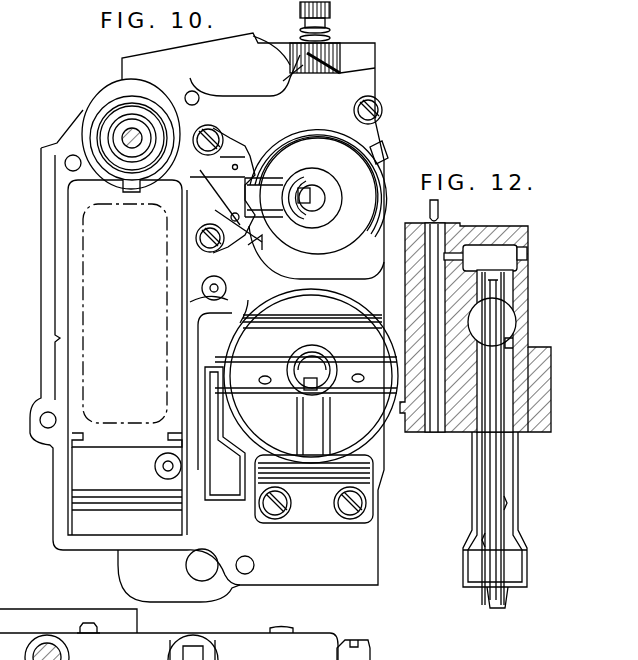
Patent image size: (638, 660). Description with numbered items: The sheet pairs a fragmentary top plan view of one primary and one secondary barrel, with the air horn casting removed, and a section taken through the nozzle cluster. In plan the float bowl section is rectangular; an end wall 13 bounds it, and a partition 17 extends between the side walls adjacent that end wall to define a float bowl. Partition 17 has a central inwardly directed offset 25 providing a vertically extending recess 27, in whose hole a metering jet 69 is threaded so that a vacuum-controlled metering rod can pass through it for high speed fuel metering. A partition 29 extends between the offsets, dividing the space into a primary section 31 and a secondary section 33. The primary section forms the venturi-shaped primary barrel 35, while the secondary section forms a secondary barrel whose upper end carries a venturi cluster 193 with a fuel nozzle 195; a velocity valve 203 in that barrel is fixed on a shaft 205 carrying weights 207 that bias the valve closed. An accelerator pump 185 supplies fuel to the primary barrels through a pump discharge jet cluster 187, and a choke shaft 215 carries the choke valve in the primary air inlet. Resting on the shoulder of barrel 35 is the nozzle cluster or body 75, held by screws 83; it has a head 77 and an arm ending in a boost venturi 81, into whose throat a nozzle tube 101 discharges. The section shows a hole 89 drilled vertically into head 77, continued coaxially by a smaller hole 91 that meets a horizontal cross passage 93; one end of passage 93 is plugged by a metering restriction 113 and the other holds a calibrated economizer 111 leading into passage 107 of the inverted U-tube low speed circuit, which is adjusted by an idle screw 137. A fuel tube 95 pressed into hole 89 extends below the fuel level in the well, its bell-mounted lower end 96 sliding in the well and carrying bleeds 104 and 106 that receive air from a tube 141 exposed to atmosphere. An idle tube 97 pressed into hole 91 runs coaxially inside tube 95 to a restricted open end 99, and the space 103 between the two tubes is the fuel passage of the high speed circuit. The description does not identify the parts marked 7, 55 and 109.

In FIG. 10, the casing body 7 is at (130, 568).
In FIG. 10, the end wall 13 is at (62, 277).
In FIG. 10, the partition 17 is at (186, 366).
In FIG. 10, the offset 25 is at (232, 318).
In FIG. 10, the recess 27 is at (190, 302).
In FIG. 10, the partition 29 is at (375, 290).
In FIG. 10, the primary section 31 is at (343, 123).
In FIG. 10, the secondary section 33 is at (368, 468).
In FIG. 10, the primary barrel 35 is at (326, 249).
In FIG. 10, the partition 55 is at (83, 348).
In FIG. 10, the metering jet 69 is at (203, 283).
In FIG. 10, the nozzle cluster 75 is at (272, 220).
In FIG. 12, the nozzle cluster 75 is at (511, 223).
In FIG. 10, the head 77 is at (212, 203).
In FIG. 10, the boost venturi 81 is at (328, 198).
In FIG. 10, the screws 83 is at (212, 132).
In FIG. 12, the hole 89 is at (512, 344).
In FIG. 12, the smaller hole 91 is at (498, 277).
In FIG. 12, the cross passage 93 is at (489, 250).
In FIG. 12, the fuel tube 95 is at (519, 506).
In FIG. 12, the bell-mounted lower end 96 is at (463, 573).
In FIG. 12, the idle tube 97 is at (504, 476).
In FIG. 12, the restricted lower open end 99 is at (504, 608).
In FIG. 10, the nozzle tube 101 is at (306, 190).
In FIG. 12, the space 103 is at (481, 502).
In FIG. 12, the bleed 104 is at (508, 502).
In FIG. 12, the bleed 106 is at (486, 538).
In FIG. 12, the passage 107 is at (490, 268).
In FIG. 10, the pin 109 is at (240, 167).
In FIG. 12, the pin 109 is at (430, 220).
In FIG. 12, the calibrated economizer 111 is at (455, 253).
In FIG. 12, the metering restriction 113 is at (523, 245).
In FIG. 10, the idle screw 137 is at (304, 14).
In FIG. 10, the tube 141 is at (242, 232).
In FIG. 10, the accelerator pump 185 is at (110, 123).
In FIG. 10, the pump discharge jet cluster 187 is at (377, 150).
In FIG. 10, the venturi cluster 193 is at (325, 347).
In FIG. 10, the fuel nozzle 195 is at (303, 383).
In FIG. 10, the velocity valve 203 is at (290, 353).
In FIG. 10, the shaft 205 is at (351, 390).
In FIG. 10, the weights 207 is at (224, 492).
In FIG. 10, the choke shaft 215 is at (48, 640).